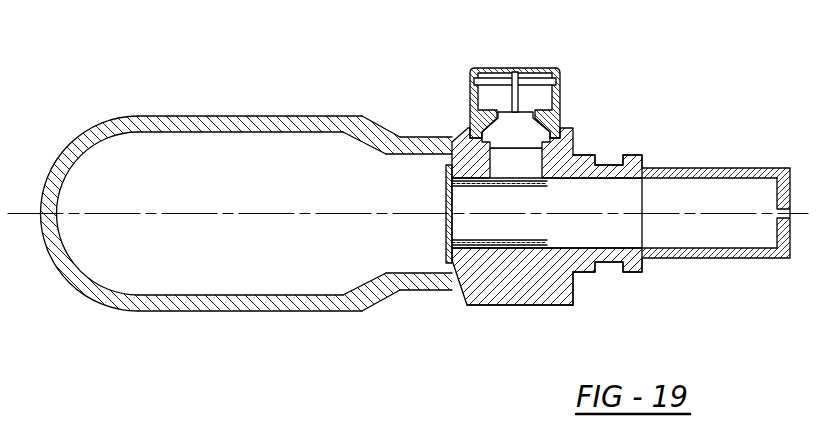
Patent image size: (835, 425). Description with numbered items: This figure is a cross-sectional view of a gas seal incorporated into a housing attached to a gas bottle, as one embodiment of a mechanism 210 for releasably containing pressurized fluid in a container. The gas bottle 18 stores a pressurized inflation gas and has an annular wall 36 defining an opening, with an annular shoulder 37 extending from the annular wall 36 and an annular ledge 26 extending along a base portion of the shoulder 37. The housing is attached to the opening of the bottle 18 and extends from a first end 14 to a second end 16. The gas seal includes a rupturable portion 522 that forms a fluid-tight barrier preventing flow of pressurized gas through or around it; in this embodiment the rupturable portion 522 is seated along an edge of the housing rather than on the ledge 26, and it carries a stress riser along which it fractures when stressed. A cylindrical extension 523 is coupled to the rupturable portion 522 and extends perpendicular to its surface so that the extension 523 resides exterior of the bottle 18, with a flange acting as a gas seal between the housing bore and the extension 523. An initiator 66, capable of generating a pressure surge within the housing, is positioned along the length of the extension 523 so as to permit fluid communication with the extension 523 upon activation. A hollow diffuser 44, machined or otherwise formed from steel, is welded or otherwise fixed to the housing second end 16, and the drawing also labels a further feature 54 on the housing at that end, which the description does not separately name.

The gas bottle 18 is at (198, 116).
The annular wall 36 is at (167, 308).
The annular ledge 26 is at (362, 309).
The annular shoulder 37 is at (430, 290).
The first end of housing 14 is at (482, 292).
The initiator 66 is at (517, 68).
The rupturable portion 522 is at (445, 202).
The extension 523 is at (548, 193).
The hex nut portion 54 is at (673, 169).
The diffuser 44 is at (755, 168).
The mechanism 210 is at (490, 328).
The second end of housing 16 is at (558, 285).